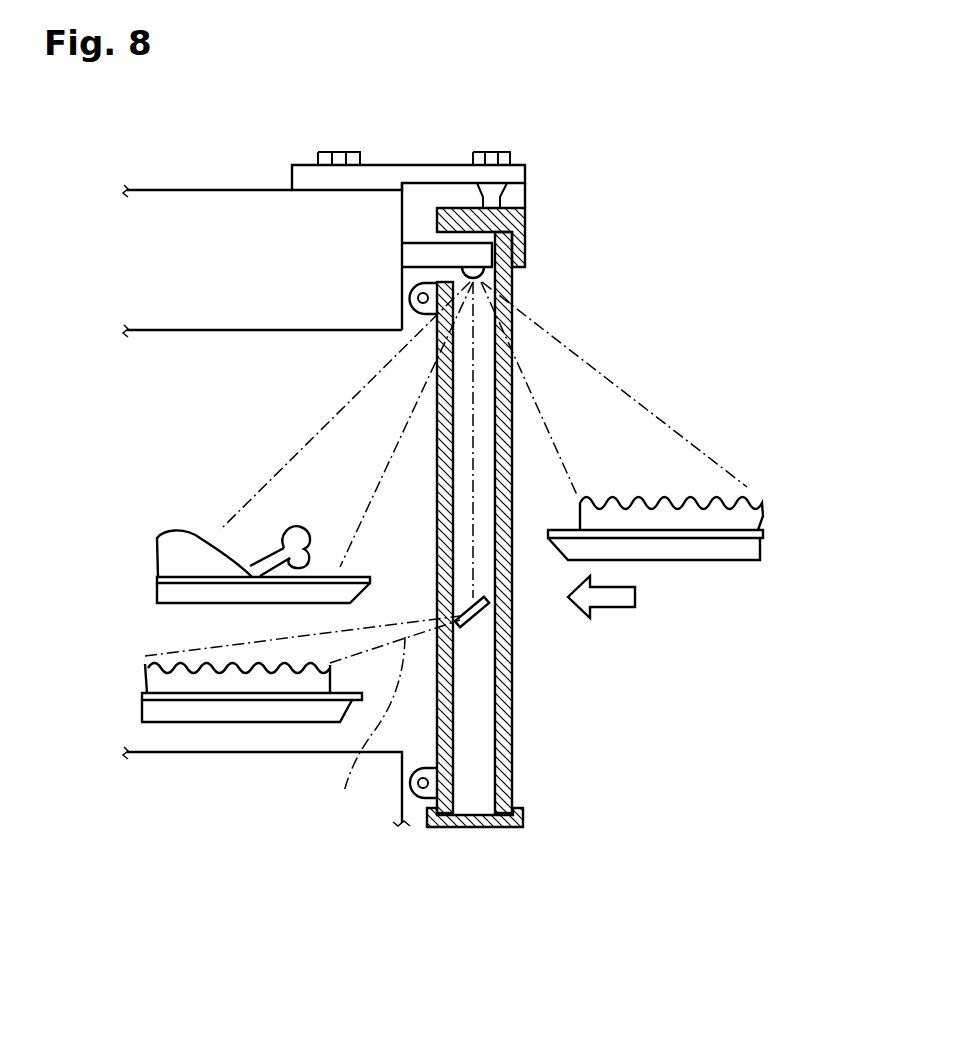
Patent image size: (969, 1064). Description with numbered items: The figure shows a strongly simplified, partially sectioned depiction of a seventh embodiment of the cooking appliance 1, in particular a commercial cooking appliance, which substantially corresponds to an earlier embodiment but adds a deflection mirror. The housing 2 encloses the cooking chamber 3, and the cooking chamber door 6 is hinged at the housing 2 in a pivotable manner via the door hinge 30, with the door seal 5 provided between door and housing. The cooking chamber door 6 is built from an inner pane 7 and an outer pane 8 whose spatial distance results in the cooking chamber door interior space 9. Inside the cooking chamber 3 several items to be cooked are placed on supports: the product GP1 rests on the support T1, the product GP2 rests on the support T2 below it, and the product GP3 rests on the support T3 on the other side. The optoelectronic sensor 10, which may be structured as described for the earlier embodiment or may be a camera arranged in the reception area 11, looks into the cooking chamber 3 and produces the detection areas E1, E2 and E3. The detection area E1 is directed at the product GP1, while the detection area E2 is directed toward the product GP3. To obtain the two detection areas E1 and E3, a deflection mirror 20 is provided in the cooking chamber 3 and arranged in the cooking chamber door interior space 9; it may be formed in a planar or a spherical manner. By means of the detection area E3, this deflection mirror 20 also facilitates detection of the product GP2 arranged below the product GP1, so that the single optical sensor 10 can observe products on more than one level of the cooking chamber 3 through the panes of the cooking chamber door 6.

The cooking appliance 1 is at (587, 137).
The housing 2 is at (146, 182).
The cooking chamber 3 is at (164, 404).
The door seal 5 is at (410, 327).
The cooking chamber door 6 is at (522, 544).
The inner pane 7 is at (441, 806).
The outer pane 8 is at (512, 753).
The cooking chamber door interior space 9 is at (483, 747).
The optical sensor 10 is at (485, 280).
The reception area 11 is at (500, 256).
The deflection mirror 20 is at (480, 627).
The door hinge 30 is at (440, 160).
The detection area E1 is at (276, 470).
The detection area E2 is at (666, 419).
The detection area E3 is at (302, 722).
The product to be cooked GP1 is at (163, 548).
The product to be cooked GP2 is at (152, 666).
The product to be cooked GP3 is at (745, 492).
The support for item to be cooked T1 is at (166, 597).
The support for item to be cooked T2 is at (166, 712).
The support for item to be cooked T3 is at (745, 548).